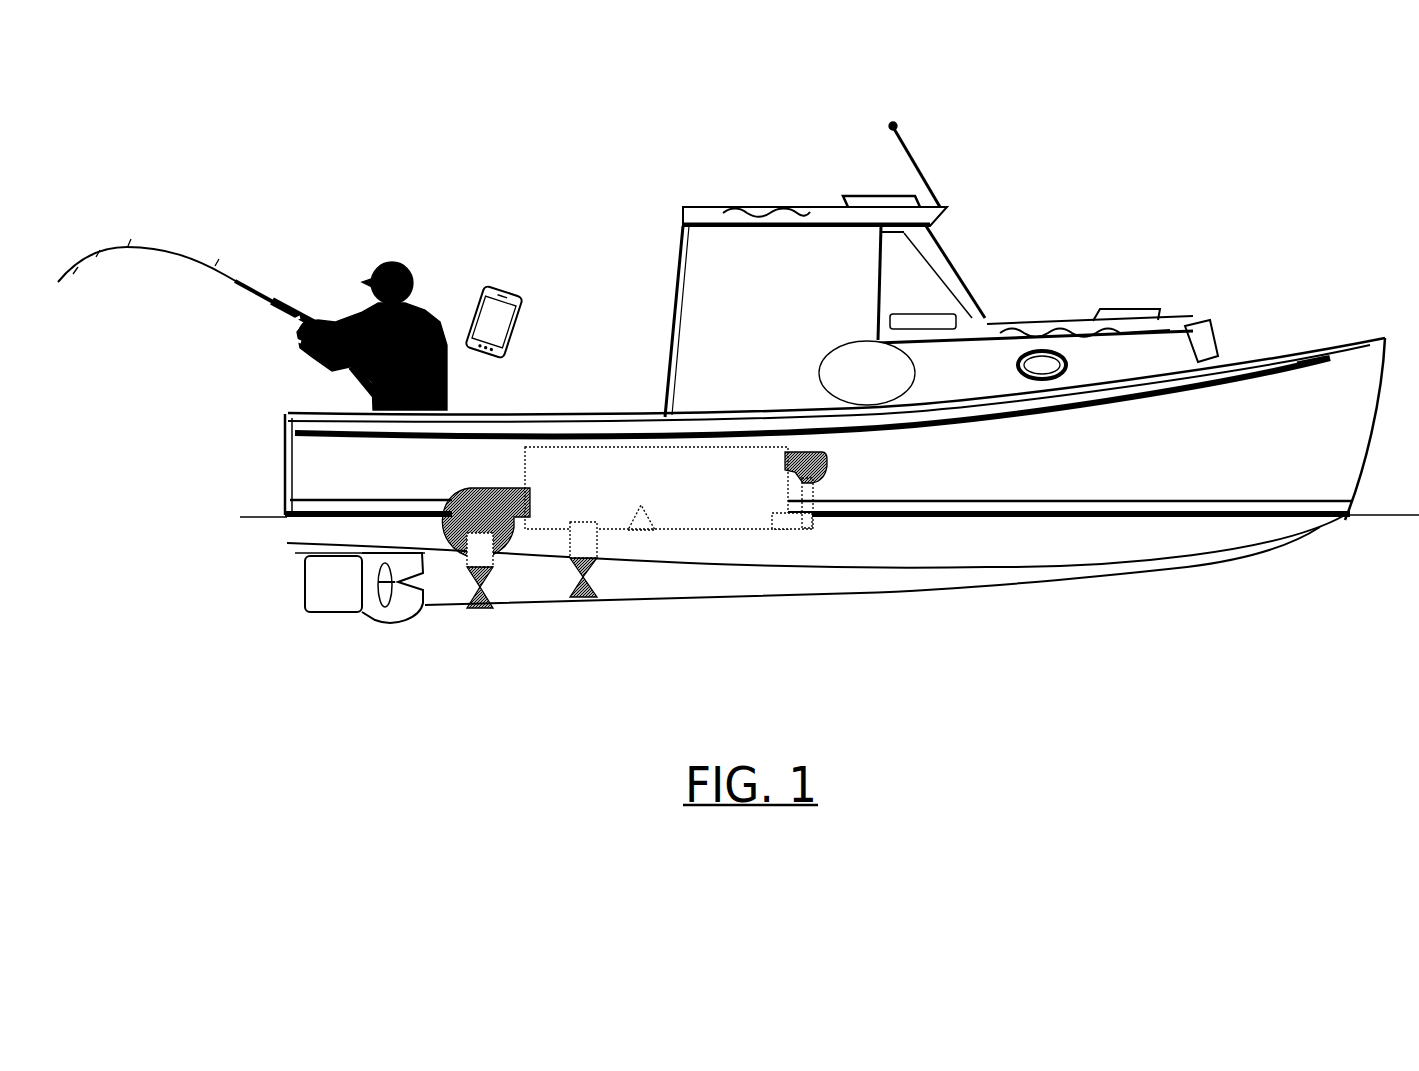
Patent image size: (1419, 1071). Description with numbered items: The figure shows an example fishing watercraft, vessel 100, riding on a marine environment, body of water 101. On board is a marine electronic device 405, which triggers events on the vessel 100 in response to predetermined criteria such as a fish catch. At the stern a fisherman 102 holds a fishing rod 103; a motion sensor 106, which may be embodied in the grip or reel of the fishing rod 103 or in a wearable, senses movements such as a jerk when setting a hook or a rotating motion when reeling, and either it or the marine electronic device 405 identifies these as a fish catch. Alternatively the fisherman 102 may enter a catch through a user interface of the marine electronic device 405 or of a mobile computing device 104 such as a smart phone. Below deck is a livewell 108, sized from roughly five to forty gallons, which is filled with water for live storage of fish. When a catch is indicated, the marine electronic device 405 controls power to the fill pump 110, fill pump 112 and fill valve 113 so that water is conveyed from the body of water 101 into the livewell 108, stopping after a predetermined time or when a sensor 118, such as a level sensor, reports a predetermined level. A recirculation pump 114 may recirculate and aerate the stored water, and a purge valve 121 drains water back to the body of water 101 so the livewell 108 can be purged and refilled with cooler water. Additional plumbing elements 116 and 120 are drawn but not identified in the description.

The vessel 100 is at (1068, 578).
The body of water 101 is at (1418, 549).
The fisherman 102 is at (406, 265).
The fishing rod 103 is at (165, 253).
The mobile computing device 104 is at (498, 284).
The motion sensor 106 is at (315, 318).
The livewell 108 is at (708, 518).
The fill pump 110 is at (452, 512).
The fill pump 112 is at (487, 556).
The fill valve 113 is at (485, 603).
The recirculation pump 114 is at (820, 465).
The outlet conduit 116 is at (803, 522).
The sensor 118 is at (643, 527).
The valve conduit 120 is at (592, 543).
The purge valve 121 is at (580, 588).
The marine electronic device 405 is at (845, 345).